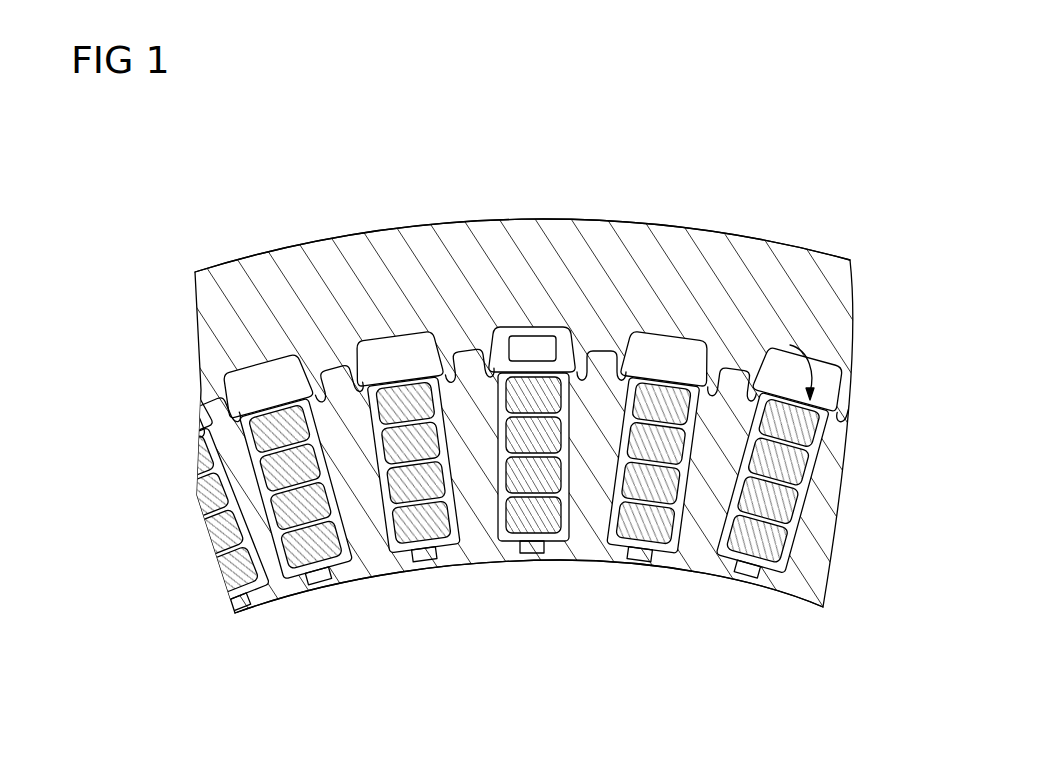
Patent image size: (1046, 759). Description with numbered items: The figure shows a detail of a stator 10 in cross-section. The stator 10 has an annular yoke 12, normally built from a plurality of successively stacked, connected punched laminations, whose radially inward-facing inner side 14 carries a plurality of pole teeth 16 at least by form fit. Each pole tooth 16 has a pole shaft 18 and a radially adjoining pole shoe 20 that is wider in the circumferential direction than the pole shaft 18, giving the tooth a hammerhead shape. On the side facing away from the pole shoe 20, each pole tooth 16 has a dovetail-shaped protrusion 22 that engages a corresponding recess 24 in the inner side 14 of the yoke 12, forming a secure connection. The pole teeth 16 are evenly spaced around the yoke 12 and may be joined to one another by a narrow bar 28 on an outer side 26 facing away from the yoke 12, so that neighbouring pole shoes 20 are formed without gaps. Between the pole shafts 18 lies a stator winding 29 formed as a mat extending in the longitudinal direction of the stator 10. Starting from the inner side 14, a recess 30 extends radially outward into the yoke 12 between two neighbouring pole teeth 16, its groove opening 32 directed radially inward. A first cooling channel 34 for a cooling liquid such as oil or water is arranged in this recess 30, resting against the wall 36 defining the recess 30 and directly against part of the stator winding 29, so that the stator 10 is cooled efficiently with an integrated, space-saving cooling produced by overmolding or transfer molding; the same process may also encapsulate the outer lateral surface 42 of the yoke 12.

The stator 10 is at (523, 420).
The yoke 12 is at (725, 257).
The inner side 14 is at (231, 432).
The pole tooth 16 is at (376, 607).
The pole shaft 18 is at (722, 405).
The pole shoe 20 is at (263, 596).
The dovetail-shaped protrusion 22 is at (300, 368).
The recess 24 is at (336, 372).
The outer side 26 is at (474, 590).
The narrow bar 28 is at (430, 568).
The stator winding 29 is at (433, 523).
The recess 30 is at (402, 345).
The groove opening 32 is at (290, 386).
The first cooling channel 34 is at (521, 335).
The wall 36 is at (650, 357).
The outer lateral surface 42 is at (818, 250).